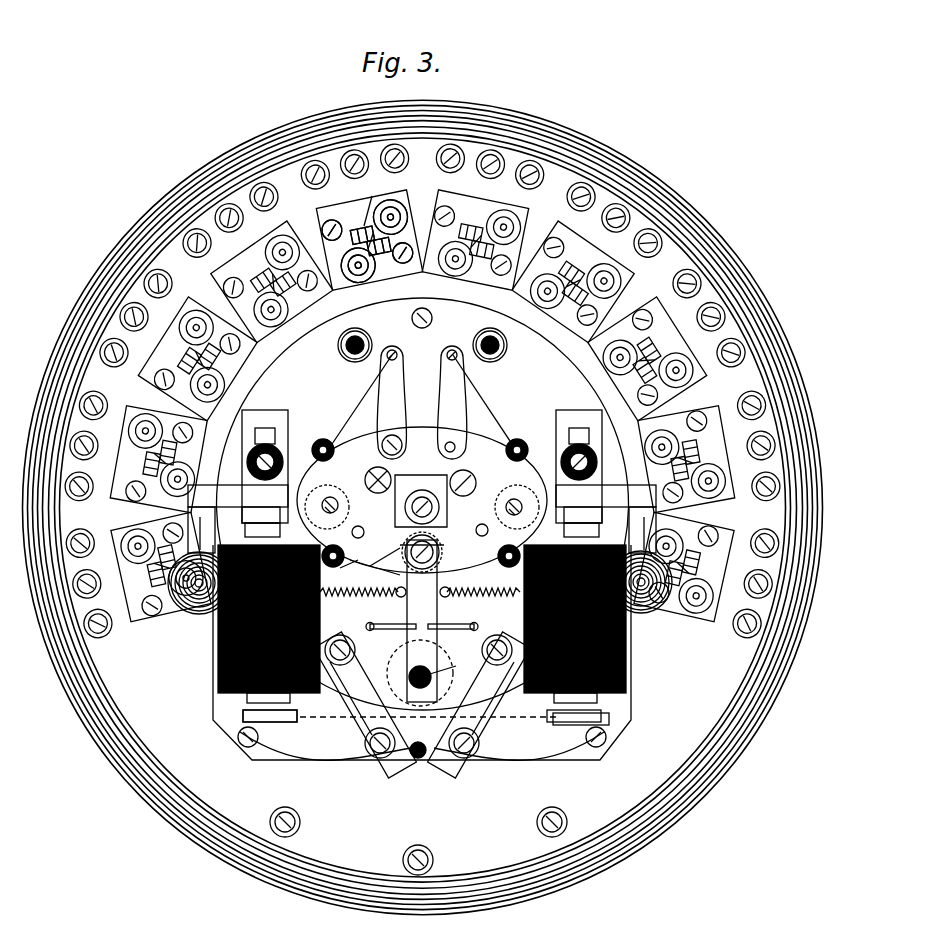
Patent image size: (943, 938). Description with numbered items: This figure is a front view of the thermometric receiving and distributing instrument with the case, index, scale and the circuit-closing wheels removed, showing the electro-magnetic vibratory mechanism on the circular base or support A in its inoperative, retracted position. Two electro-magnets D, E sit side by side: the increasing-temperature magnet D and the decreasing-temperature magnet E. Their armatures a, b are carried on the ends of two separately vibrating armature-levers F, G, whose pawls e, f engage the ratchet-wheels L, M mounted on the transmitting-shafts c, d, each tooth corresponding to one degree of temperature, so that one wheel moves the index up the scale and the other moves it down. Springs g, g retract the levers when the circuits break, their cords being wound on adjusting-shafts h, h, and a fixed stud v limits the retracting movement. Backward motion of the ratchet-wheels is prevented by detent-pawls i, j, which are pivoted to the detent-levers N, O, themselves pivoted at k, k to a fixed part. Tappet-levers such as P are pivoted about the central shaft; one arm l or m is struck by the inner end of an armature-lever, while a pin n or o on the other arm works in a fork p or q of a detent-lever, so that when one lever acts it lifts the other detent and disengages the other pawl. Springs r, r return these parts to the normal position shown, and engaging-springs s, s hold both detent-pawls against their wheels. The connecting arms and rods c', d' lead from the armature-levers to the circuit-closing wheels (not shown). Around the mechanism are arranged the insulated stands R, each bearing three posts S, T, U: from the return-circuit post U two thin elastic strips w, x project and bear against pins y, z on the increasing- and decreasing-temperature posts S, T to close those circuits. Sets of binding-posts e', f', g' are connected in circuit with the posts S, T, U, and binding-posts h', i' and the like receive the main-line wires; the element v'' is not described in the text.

The base or support A is at (423, 507).
The increasing-temperature electro-magnet D is at (222, 640).
The decreasing-temperature electro-magnet E is at (622, 640).
The armature-lever F is at (327, 705).
The armature-lever G is at (517, 705).
The pivot boss F' is at (420, 673).
The ratchet-wheel M is at (327, 507).
The ratchet-wheel L is at (517, 507).
The detent-lever N is at (451, 402).
The detent-lever O is at (391, 402).
The tappet-lever P is at (419, 501).
The increasing-temperature post S is at (396, 216).
The decreasing-temperature post T is at (431, 240).
The return-circuit post U is at (360, 222).
The stand or base R is at (371, 203).
The armature a is at (271, 710).
The armature b is at (581, 716).
The transmitting-shaft c is at (422, 511).
The connecting arm and rod c' is at (453, 617).
The transmitting-shaft d is at (332, 501).
The connecting arm and rod d' is at (391, 615).
The pawl e is at (489, 532).
The binding-post e' is at (240, 331).
The pawl f is at (409, 617).
The binding-post f' is at (196, 386).
The retracting spring g is at (426, 540).
The binding-post g' is at (217, 359).
The adjusting-shaft h is at (420, 582).
The binding-post h' is at (291, 822).
The detent-pawl i is at (463, 449).
The binding-post i' is at (557, 822).
The detent-pawl j is at (334, 450).
The pivot k is at (463, 483).
The tappet arm l is at (403, 480).
The tappet arm m is at (382, 567).
The pin or stud n is at (350, 558).
The pin or stud o is at (385, 560).
The fork or slot p is at (361, 526).
The fork or slot q is at (470, 520).
The spring r is at (420, 584).
The engaging-spring s is at (422, 401).
The fixed stud v is at (440, 669).
The base screw v'' is at (427, 859).
The circuit-closing spring w is at (374, 232).
The circuit-closing spring x is at (403, 253).
The pin or projection y is at (366, 232).
The pin or projection z is at (372, 262).